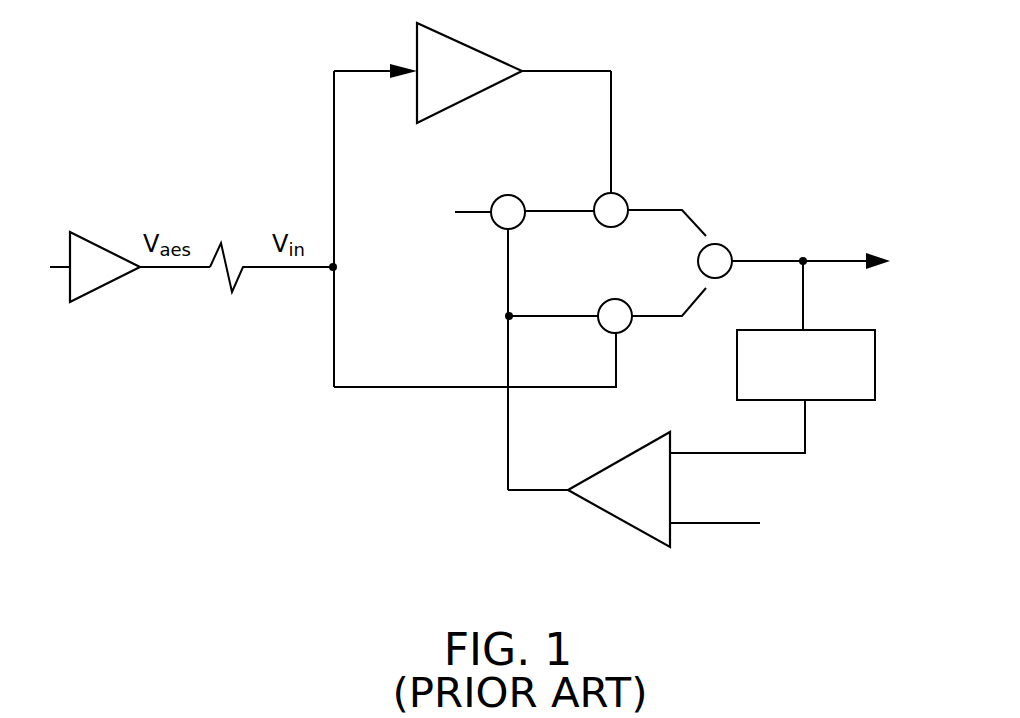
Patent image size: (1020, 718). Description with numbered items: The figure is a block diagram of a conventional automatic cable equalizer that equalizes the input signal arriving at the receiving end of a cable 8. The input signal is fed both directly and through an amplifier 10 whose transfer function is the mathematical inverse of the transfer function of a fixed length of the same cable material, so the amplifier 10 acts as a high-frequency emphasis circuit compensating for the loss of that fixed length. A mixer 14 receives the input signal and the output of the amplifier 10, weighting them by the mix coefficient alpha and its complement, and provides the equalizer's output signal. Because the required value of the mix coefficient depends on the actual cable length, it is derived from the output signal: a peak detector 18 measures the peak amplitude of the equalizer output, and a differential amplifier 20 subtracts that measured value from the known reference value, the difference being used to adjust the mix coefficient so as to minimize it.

The cable 8 is at (222, 280).
The amplifier 10 is at (453, 38).
The mixer 14 is at (738, 162).
The peak detector 18 is at (875, 363).
The differential amplifier 20 is at (600, 512).